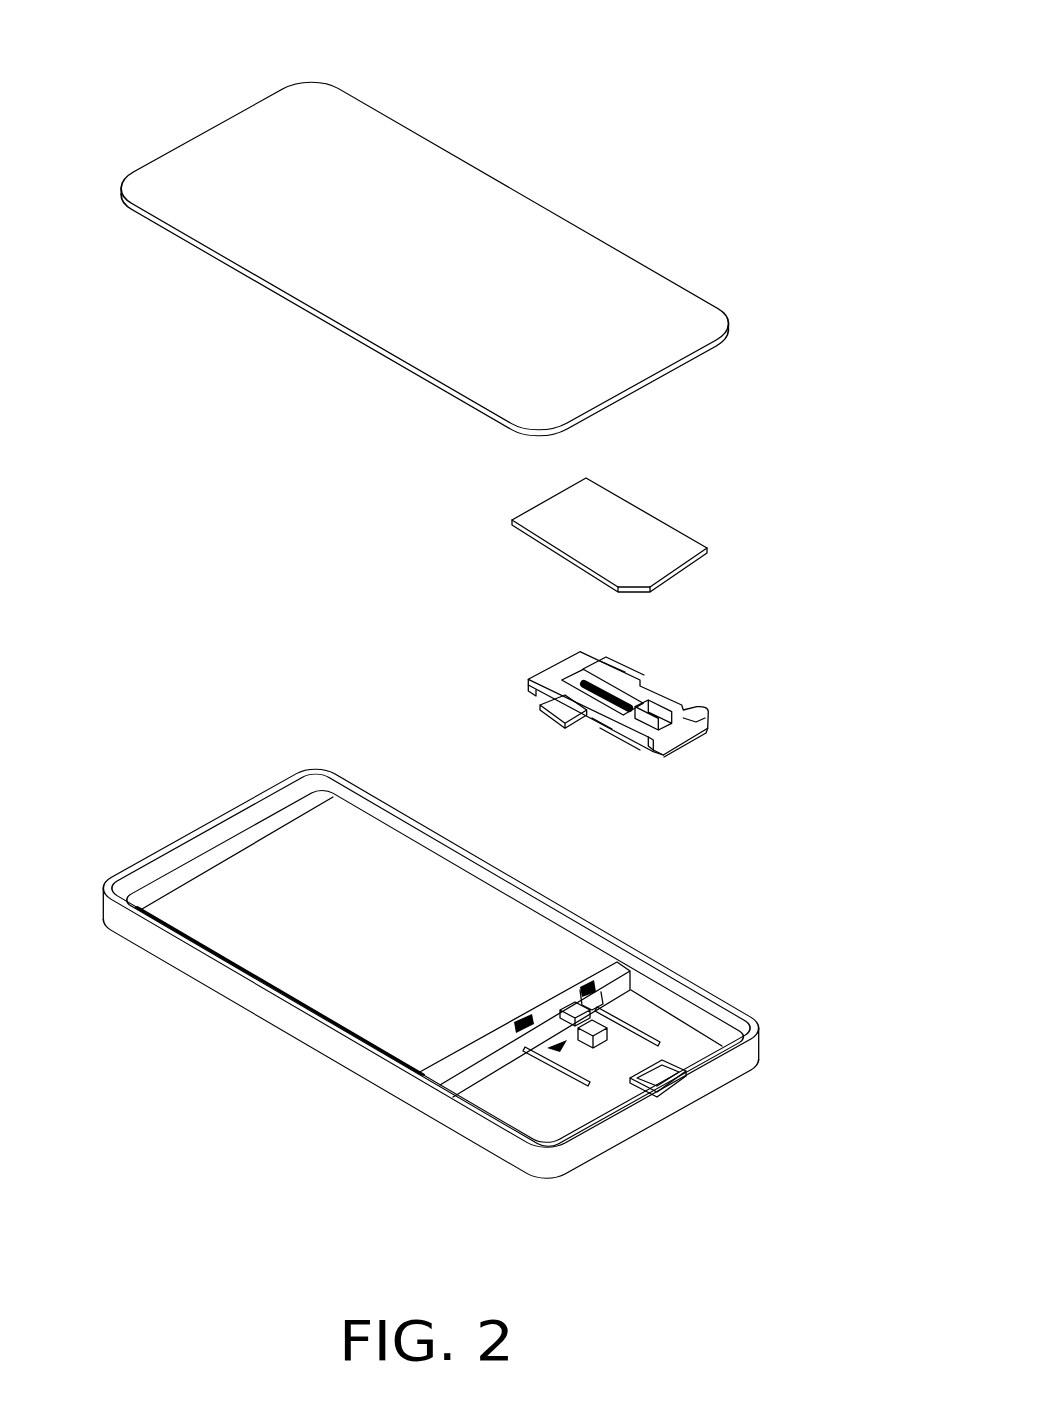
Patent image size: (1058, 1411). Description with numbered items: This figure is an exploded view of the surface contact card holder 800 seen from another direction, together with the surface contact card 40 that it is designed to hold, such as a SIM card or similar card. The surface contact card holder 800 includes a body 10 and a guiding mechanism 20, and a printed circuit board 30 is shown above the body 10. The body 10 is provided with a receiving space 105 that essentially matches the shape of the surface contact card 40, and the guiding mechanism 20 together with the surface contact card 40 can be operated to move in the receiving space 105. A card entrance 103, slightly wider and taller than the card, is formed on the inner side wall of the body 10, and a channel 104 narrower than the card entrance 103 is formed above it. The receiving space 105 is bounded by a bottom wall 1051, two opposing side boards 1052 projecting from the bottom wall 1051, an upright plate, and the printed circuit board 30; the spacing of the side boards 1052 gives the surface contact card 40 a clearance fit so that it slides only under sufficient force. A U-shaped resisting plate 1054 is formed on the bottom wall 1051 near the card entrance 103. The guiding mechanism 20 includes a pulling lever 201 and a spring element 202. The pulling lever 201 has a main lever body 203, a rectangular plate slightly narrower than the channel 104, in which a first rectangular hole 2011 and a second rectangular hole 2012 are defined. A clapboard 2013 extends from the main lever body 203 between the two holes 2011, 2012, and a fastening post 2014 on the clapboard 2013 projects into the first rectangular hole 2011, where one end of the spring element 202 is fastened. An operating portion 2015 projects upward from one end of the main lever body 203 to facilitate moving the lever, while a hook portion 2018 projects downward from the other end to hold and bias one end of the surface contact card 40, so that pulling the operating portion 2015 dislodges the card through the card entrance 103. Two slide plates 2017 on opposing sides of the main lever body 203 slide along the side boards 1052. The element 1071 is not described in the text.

The surface contact card holder 800 is at (440, 40).
The printed circuit board 30 is at (380, 148).
The surface contact card 40 is at (643, 522).
The guiding mechanism 20 is at (640, 653).
The body 10 is at (742, 1060).
The pulling lever 201 is at (613, 730).
The spring element 202 is at (600, 683).
The main lever body 203 is at (613, 675).
The first rectangular hole 2011 is at (575, 680).
The second rectangular hole 2012 is at (685, 705).
The clapboard 2013 is at (640, 707).
The fastening post 2014 is at (600, 713).
The operating portion 2015 is at (532, 693).
The slide plates 2017 is at (563, 713).
The hook portion 2018 is at (653, 757).
The card entrance 103 is at (548, 1010).
The channel 104 is at (570, 1005).
The receiving space 105 is at (537, 1040).
The bottom wall 1051 is at (615, 1055).
The side boards 1052 is at (573, 1077).
The U-shaped resisting plate 1054 is at (548, 1050).
The slot frame 1071 is at (670, 1067).